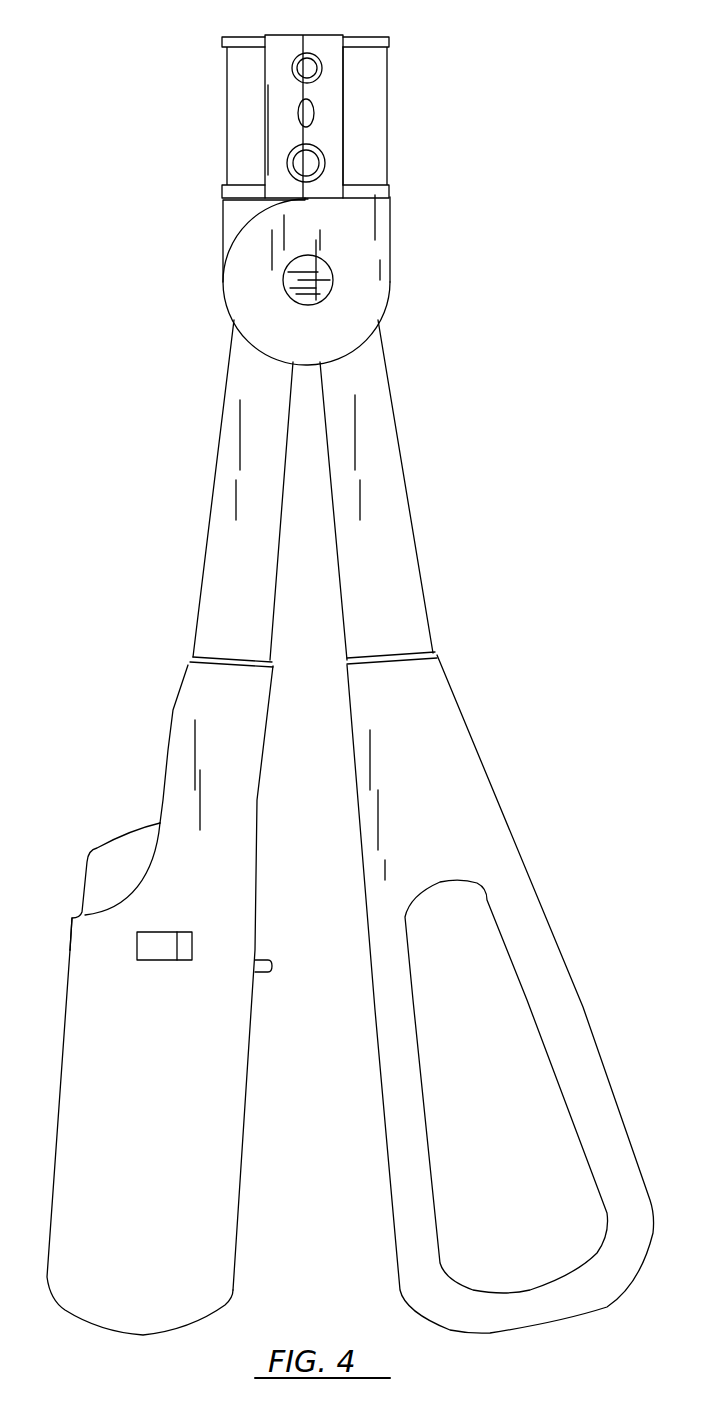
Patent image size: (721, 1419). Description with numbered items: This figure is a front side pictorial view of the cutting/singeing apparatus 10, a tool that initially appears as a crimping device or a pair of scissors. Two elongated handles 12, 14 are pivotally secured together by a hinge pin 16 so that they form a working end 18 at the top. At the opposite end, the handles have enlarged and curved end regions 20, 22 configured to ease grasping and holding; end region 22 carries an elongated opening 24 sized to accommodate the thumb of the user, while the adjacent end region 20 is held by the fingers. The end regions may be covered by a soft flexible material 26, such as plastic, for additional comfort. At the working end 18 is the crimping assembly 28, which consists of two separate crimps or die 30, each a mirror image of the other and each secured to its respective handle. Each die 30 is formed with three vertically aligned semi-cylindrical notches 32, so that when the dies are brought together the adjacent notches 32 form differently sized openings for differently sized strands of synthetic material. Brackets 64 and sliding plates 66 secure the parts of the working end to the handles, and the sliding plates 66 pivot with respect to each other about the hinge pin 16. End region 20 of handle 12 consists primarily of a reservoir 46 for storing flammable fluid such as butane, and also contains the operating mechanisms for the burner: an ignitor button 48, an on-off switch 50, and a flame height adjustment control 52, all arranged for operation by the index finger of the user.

The cutting/singeing apparatus 10 is at (165, 471).
The elongated handle 12 is at (203, 573).
The elongated handle 14 is at (430, 596).
The hinge pin 16 is at (285, 289).
The working end 18 is at (190, 125).
The end region 20 is at (55, 1132).
The end region 22 is at (610, 1097).
The elongated opening 24 is at (575, 1130).
The soft flexible material 26 is at (228, 656).
The crimping assembly 28 is at (343, 35).
The crimps or die 30 is at (348, 122).
The semi-cylindrical notches 32 is at (298, 56).
The reservoir 46 is at (68, 998).
The ignitor button 48 is at (97, 848).
The on-off switch 50 is at (180, 932).
The flame height adjustment control 52 is at (275, 966).
The brackets 64 is at (226, 78).
The sliding plates 66 is at (223, 240).